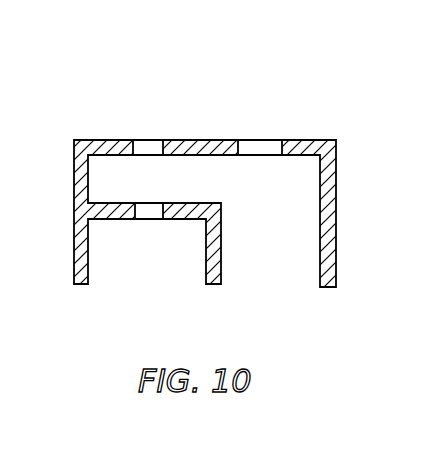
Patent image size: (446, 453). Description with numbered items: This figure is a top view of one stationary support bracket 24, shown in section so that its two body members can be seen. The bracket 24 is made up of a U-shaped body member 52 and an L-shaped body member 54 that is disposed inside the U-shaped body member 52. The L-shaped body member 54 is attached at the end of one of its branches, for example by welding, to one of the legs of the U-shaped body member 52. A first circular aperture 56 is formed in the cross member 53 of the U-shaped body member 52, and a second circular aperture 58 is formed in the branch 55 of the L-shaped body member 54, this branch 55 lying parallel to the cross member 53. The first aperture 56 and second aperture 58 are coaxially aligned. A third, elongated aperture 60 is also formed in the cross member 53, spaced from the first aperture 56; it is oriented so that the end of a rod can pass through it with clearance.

The stationary support bracket 24 is at (219, 163).
The U-shaped body member 52 is at (336, 164).
The cross member 53 is at (202, 142).
The L-shaped body member 54 is at (222, 250).
The branch 55 is at (106, 198).
The first circular aperture 56 is at (134, 152).
The second circular aperture 58 is at (137, 204).
The elongated aperture 60 is at (245, 150).